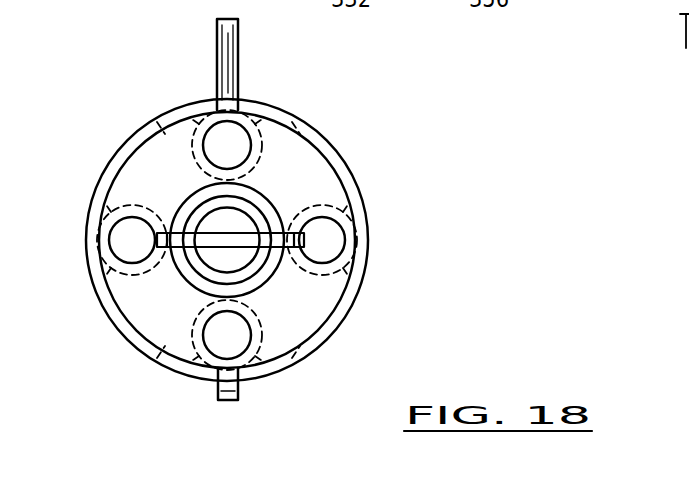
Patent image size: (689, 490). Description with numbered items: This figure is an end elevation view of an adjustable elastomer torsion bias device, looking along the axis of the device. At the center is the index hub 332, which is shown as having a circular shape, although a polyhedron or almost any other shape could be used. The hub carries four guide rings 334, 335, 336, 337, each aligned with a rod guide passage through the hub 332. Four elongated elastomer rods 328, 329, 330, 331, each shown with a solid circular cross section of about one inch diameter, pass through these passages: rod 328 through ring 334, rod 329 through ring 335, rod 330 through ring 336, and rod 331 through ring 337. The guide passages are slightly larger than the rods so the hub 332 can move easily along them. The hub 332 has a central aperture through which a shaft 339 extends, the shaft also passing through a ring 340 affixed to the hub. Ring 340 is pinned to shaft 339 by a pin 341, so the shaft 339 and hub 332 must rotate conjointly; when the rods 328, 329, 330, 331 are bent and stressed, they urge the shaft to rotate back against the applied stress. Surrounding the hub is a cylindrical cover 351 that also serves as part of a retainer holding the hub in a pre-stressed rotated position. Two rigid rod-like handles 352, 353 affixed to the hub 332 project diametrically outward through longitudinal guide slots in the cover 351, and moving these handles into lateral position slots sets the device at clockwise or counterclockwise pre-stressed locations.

The elastomer rod 328 is at (230, 144).
The elastomer rod 329 is at (325, 248).
The elastomer rod 330 is at (232, 339).
The elastomer rod 331 is at (133, 250).
The index hub 332 is at (303, 318).
The guide ring 334 is at (182, 118).
The guide ring 335 is at (345, 210).
The guide ring 336 is at (182, 366).
The guide ring 337 is at (117, 205).
The shaft 339 is at (193, 277).
The ring 340 is at (195, 203).
The pin 341 is at (253, 240).
The cylindrical cover 351 is at (335, 147).
The handle 352 is at (225, 47).
The handle 353 is at (238, 393).